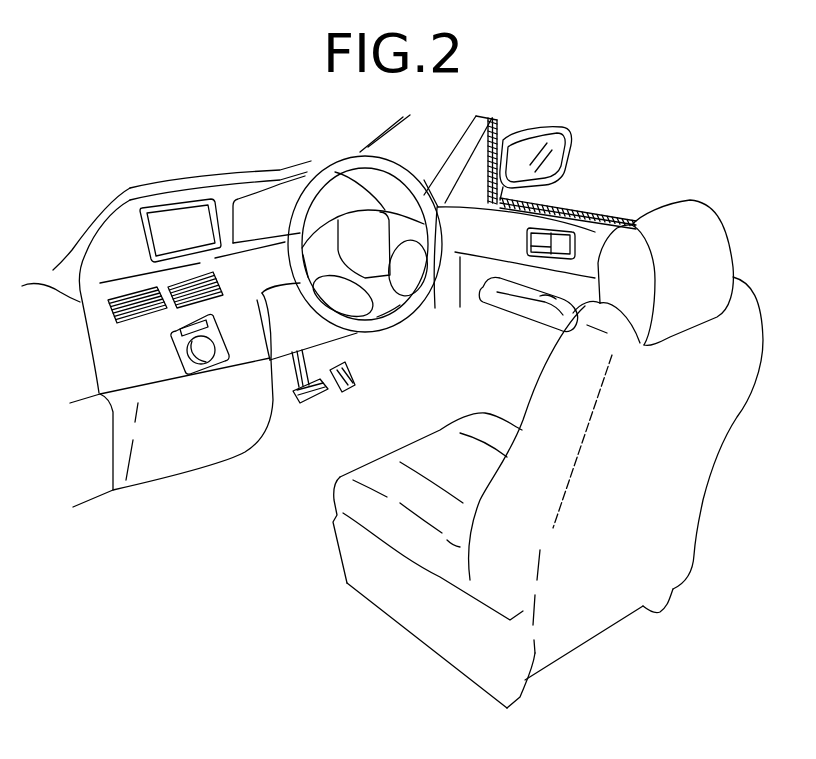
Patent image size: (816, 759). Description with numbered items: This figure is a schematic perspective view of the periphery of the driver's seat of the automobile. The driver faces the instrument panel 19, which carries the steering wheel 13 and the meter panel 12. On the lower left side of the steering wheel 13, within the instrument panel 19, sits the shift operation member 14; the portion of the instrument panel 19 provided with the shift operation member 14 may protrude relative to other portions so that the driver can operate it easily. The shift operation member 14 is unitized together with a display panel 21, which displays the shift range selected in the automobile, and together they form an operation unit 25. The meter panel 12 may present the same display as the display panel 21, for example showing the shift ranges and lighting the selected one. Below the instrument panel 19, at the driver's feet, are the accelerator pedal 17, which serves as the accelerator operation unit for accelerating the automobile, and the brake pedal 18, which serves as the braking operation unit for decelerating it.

The meter panel 12 is at (259, 200).
The steering wheel 13 is at (334, 163).
The shift operation member 14 is at (200, 356).
The accelerator pedal 17 is at (357, 373).
The brake pedal 18 is at (313, 403).
The instrument panel 19 is at (100, 300).
The display panel 21 is at (177, 337).
The operation unit 25 is at (224, 362).